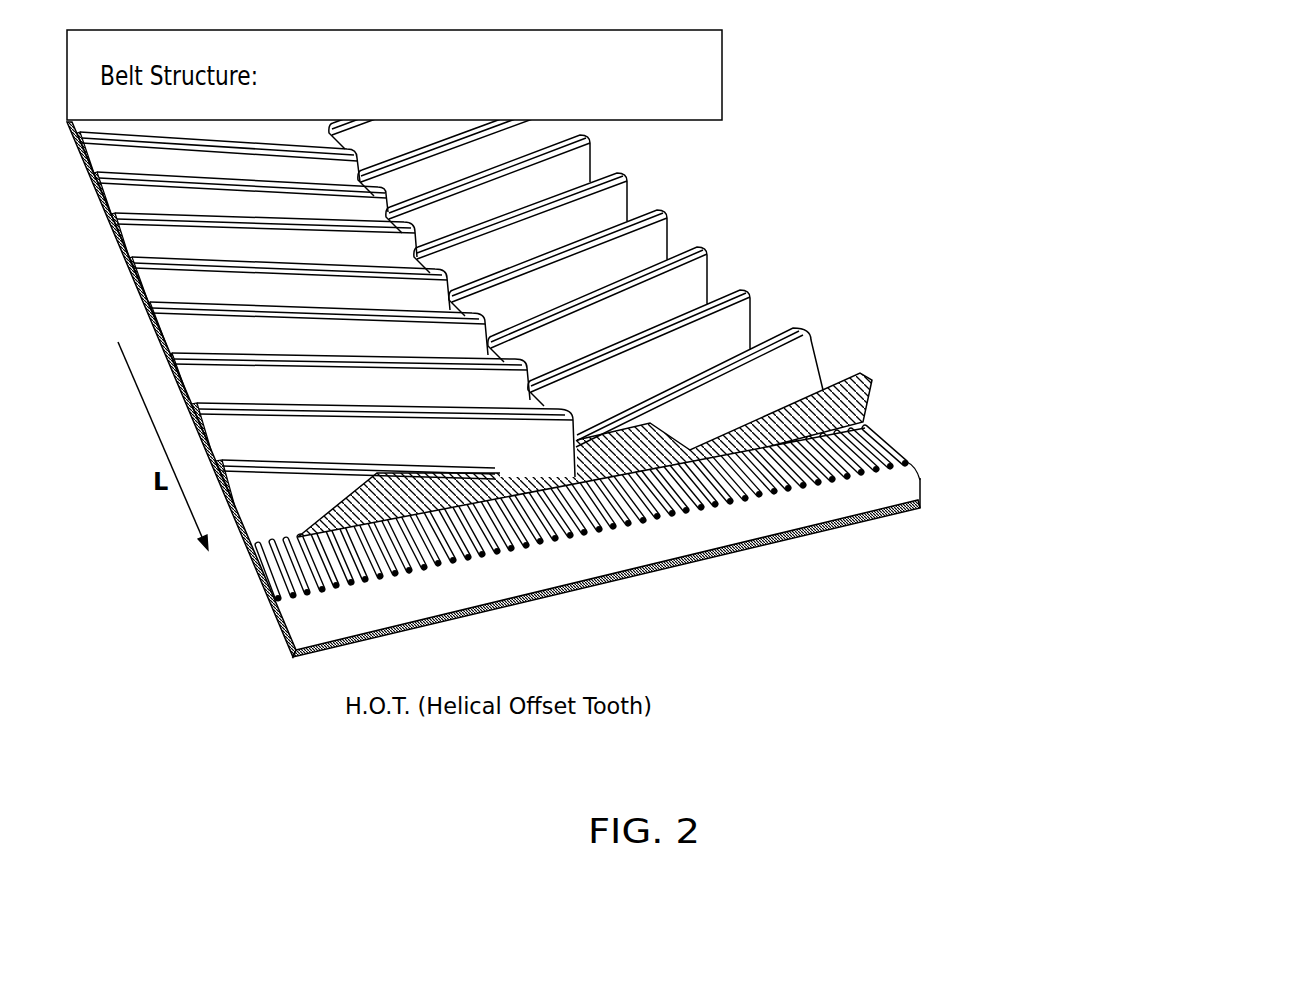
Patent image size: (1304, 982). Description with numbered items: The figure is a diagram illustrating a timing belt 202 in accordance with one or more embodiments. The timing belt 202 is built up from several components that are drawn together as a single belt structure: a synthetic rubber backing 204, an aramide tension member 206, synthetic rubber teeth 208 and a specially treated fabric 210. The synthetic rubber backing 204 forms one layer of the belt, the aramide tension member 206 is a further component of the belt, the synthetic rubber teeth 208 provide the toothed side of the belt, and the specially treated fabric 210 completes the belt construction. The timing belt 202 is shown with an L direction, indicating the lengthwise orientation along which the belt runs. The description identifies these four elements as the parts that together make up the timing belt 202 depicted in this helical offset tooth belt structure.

The timing belt 202 is at (653, 366).
The synthetic rubber backing 204 is at (848, 552).
The aramide tension member 206 is at (882, 445).
The synthetic rubber teeth 208 is at (748, 318).
The specially treated fabric 210 is at (548, 174).